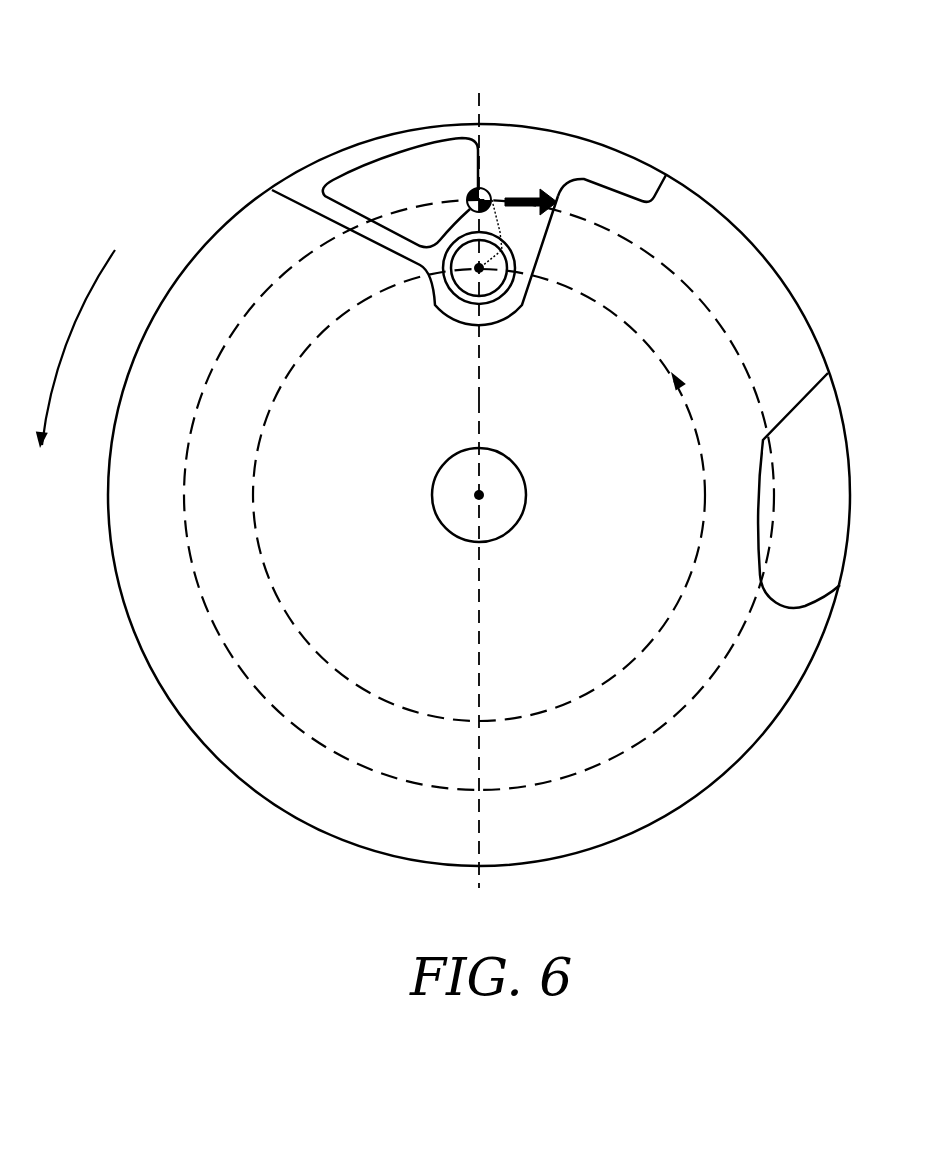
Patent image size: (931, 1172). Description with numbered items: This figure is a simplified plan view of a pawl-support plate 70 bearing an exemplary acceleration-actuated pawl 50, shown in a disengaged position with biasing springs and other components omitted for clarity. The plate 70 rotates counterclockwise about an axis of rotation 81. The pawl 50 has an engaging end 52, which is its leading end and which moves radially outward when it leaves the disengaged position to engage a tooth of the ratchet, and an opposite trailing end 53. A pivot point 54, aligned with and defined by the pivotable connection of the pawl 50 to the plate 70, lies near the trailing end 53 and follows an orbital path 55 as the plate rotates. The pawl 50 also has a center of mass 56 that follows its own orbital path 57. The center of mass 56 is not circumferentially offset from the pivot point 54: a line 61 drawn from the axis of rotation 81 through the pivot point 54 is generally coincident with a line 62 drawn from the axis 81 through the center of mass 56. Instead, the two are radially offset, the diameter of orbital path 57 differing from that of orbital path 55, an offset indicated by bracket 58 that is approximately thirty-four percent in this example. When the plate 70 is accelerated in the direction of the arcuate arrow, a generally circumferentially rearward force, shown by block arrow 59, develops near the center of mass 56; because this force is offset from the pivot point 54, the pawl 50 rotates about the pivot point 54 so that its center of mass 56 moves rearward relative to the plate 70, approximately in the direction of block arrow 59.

The acceleration-actuated pawl 50 is at (308, 70).
The engaging end 52 is at (238, 183).
The trailing end 53 is at (703, 173).
The pivot point 54 is at (478, 270).
The orbital path 55 is at (258, 530).
The center of mass 56 is at (487, 189).
The orbital path 57 is at (192, 572).
The bracket 58 is at (500, 232).
The block arrow 59 is at (515, 197).
The line 61 is at (480, 418).
The line 62 is at (479, 387).
The pawl-support plate 70 is at (197, 737).
The axis of rotation 81 is at (479, 495).